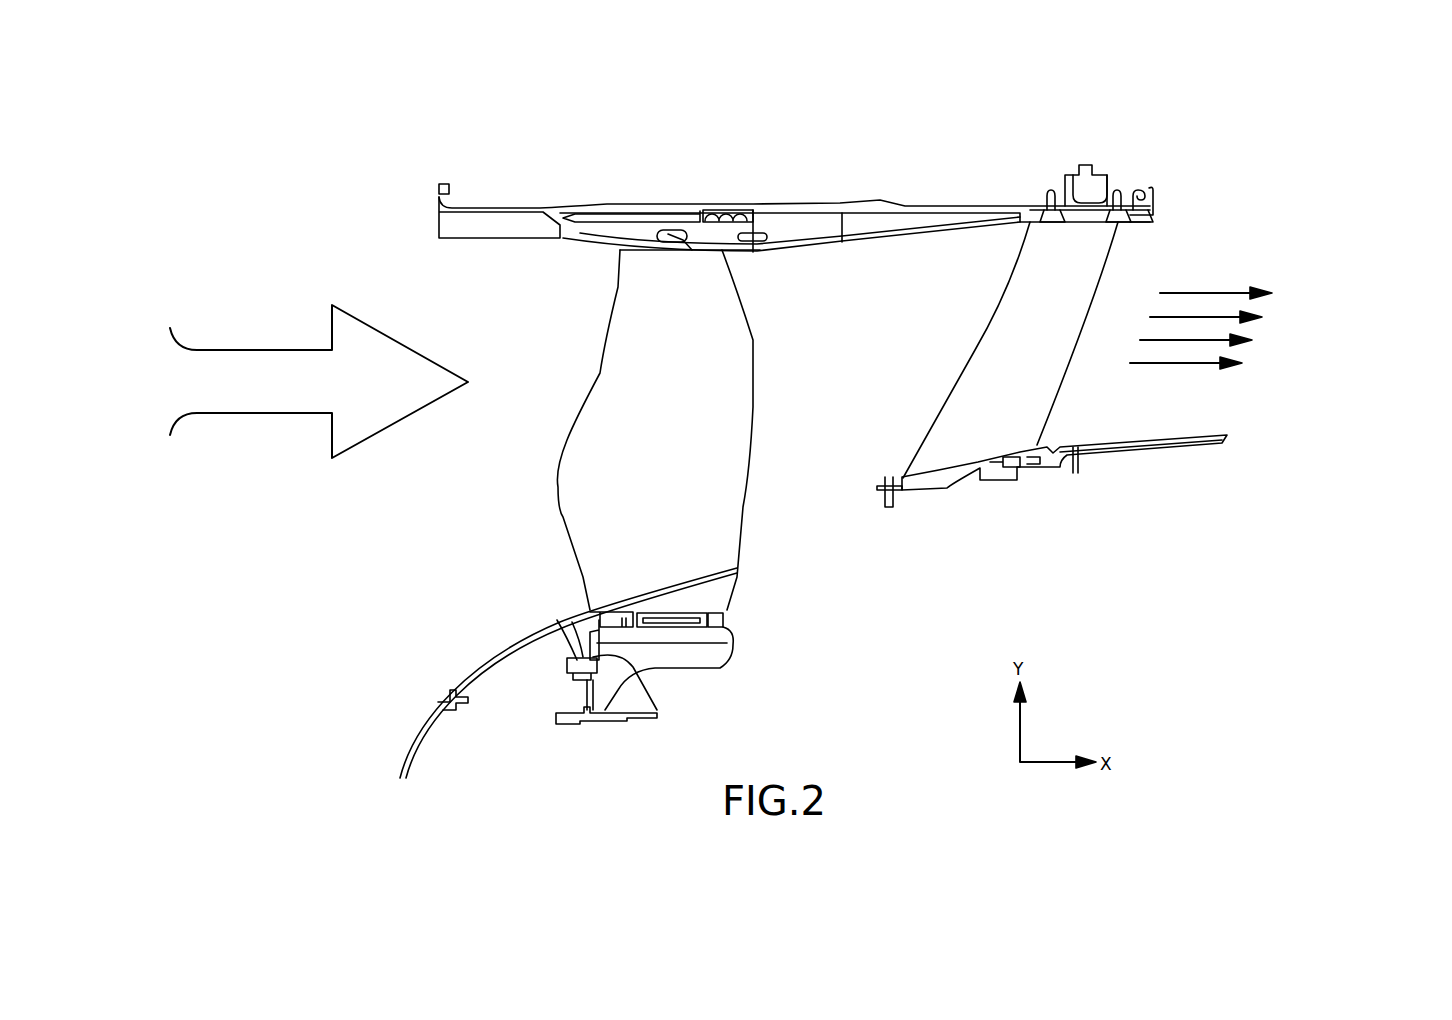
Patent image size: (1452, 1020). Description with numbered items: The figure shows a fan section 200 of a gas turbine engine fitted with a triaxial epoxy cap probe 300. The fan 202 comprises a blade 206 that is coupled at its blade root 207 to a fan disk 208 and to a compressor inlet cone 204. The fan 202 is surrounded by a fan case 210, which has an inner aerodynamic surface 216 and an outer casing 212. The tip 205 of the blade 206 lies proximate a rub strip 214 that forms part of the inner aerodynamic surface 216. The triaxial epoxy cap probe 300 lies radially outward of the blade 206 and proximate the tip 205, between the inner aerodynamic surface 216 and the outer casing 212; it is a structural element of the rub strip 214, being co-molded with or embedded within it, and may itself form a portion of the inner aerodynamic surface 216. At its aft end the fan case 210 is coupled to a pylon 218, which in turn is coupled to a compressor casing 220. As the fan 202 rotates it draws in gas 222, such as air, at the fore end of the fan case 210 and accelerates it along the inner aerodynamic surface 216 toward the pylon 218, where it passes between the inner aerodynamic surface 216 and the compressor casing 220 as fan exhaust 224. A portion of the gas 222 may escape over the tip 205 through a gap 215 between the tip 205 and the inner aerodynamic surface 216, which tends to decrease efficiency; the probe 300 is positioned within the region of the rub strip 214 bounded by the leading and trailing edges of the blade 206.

The fan section 200 is at (305, 104).
The fan 202 is at (669, 467).
The compressor inlet cone 204 is at (483, 657).
The tip 205 is at (633, 260).
The blade 206 is at (590, 522).
The blade root 207 is at (730, 615).
The fan disk 208 is at (717, 635).
The fan case 210 is at (533, 227).
The outer casing 212 is at (823, 212).
The rub strip 214 is at (577, 243).
The gap 215 is at (665, 250).
The inner aerodynamic surface 216 is at (773, 253).
The pylon 218 is at (1103, 248).
The compressor casing 220 is at (1130, 448).
The gas 222 is at (273, 405).
The fan exhaust 224 is at (1238, 292).
The triaxial epoxy cap probe 300 is at (692, 250).